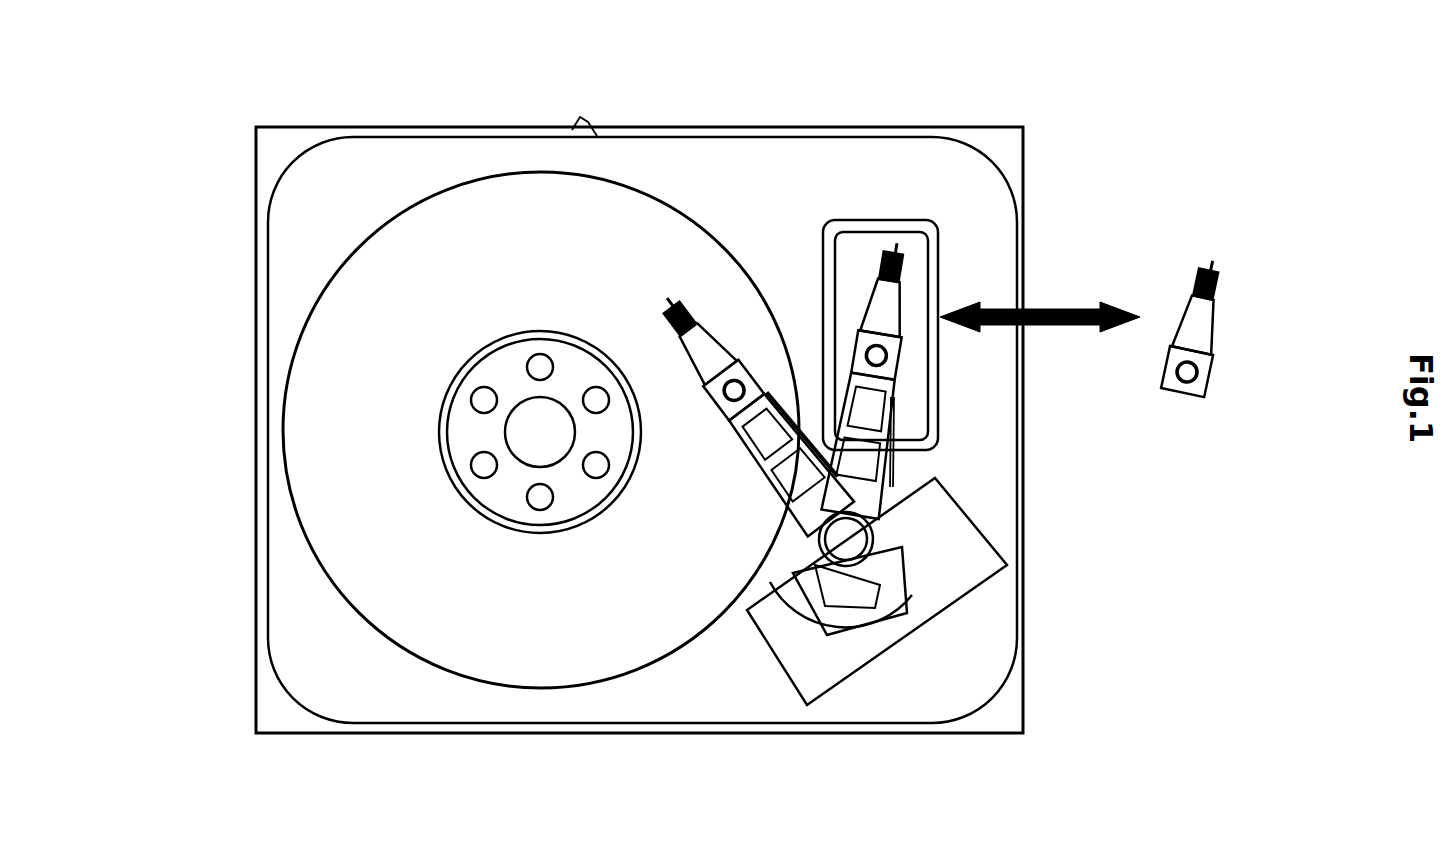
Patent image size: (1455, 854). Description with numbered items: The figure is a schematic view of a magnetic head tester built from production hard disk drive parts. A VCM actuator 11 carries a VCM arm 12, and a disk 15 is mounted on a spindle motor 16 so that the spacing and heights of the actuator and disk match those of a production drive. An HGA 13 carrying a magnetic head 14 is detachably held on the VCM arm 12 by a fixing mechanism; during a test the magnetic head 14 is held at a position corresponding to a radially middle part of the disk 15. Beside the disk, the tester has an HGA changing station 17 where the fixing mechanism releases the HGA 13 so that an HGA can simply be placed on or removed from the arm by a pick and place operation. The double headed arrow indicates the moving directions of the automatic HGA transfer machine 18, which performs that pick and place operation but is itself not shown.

The VCM actuator 11 is at (1024, 591).
The VCM arm 12 is at (692, 496).
The HGA 13 is at (997, 288).
The magnetic head 14 is at (923, 246).
The disk 15 is at (532, 212).
The spindle motor 16 is at (483, 444).
The HGA changing station 17 is at (917, 257).
The moving directions of automatic HGA transfer machine 18 is at (1119, 225).